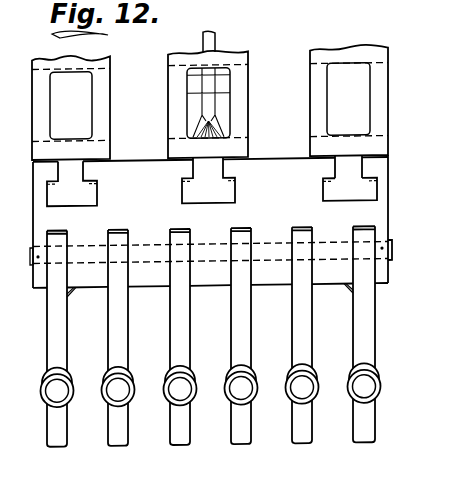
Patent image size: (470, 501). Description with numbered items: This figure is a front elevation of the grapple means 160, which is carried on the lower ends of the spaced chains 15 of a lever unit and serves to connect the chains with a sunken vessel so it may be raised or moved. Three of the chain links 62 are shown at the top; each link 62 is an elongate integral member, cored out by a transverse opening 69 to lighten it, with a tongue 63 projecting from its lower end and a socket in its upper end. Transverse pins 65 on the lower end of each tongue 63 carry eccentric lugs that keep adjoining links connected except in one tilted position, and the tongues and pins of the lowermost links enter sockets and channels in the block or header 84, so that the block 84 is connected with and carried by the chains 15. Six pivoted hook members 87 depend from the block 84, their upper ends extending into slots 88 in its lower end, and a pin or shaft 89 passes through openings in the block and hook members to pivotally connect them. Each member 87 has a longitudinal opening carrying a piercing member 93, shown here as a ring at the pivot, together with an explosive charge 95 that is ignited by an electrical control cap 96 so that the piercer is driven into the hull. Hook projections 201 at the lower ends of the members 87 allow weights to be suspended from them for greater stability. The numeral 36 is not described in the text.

The chains 15 is at (383, 103).
The T-shaped slide head 36 is at (48, 198).
The links 62 is at (250, 111).
The tongue 63 is at (350, 167).
The pins 65 is at (365, 192).
The transverse openings 69 is at (71, 107).
The block or header 84 is at (209, 226).
The hooks 87 is at (240, 333).
The slots 88 is at (291, 236).
The pin or shaft 89 is at (399, 248).
The piercing members 93 is at (368, 390).
The charge 95 is at (33, 306).
The ignition device 96 is at (33, 423).
The grapple means 160 is at (385, 353).
The hook projections 201 is at (368, 430).